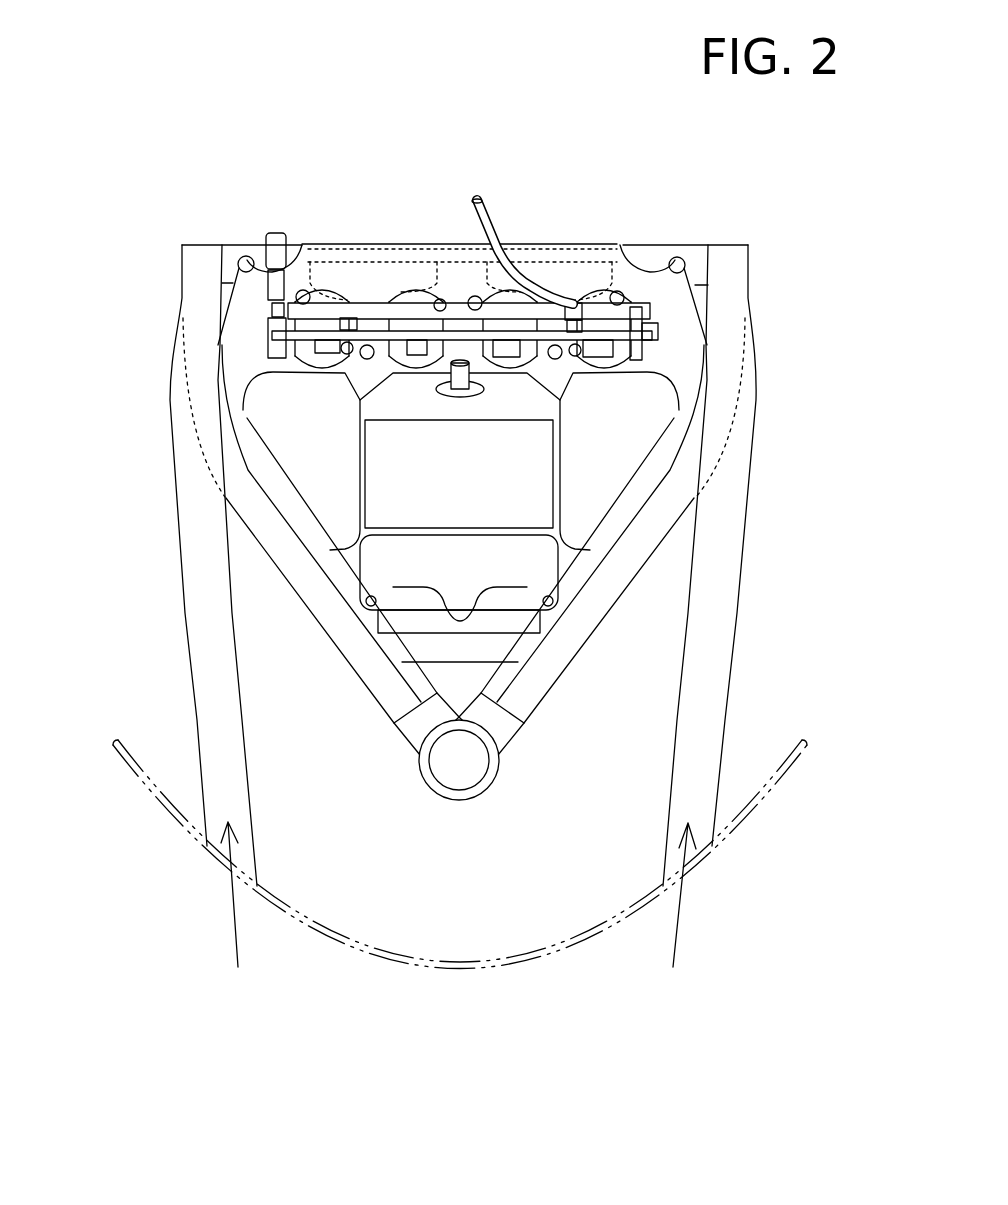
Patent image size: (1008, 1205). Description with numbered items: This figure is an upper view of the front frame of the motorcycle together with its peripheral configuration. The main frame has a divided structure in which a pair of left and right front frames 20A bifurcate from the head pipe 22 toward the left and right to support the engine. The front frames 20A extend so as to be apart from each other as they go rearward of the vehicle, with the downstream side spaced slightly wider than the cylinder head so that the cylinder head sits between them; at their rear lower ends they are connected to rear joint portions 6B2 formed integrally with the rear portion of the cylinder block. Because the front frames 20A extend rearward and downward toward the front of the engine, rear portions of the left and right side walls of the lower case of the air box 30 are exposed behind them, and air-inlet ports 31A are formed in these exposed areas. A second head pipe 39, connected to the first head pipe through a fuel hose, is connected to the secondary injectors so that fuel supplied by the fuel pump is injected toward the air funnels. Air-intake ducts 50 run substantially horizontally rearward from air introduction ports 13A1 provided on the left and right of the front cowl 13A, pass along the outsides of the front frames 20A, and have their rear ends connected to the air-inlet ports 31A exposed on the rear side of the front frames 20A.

The air box 30 is at (586, 232).
The second head pipe 39 is at (440, 243).
The rear joint portions 6B2 is at (673, 247).
The air-inlet ports 31A is at (222, 347).
The air-intake ducts 50 is at (183, 600).
The front frames 20A is at (342, 656).
The head pipe 22 is at (463, 802).
The front cowl 13A is at (450, 968).
The air introduction ports 13A1 is at (217, 862).